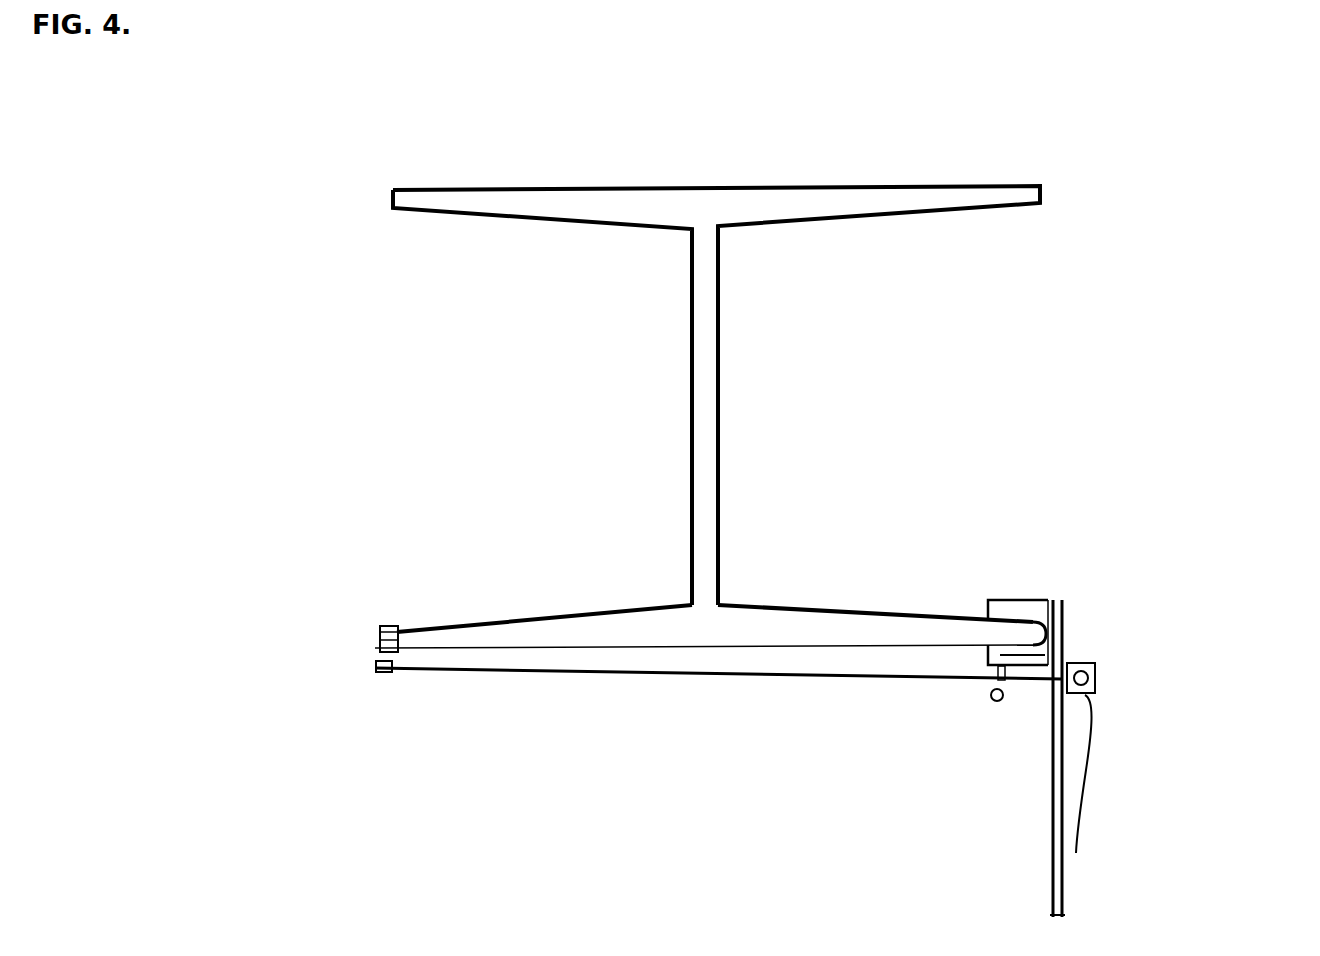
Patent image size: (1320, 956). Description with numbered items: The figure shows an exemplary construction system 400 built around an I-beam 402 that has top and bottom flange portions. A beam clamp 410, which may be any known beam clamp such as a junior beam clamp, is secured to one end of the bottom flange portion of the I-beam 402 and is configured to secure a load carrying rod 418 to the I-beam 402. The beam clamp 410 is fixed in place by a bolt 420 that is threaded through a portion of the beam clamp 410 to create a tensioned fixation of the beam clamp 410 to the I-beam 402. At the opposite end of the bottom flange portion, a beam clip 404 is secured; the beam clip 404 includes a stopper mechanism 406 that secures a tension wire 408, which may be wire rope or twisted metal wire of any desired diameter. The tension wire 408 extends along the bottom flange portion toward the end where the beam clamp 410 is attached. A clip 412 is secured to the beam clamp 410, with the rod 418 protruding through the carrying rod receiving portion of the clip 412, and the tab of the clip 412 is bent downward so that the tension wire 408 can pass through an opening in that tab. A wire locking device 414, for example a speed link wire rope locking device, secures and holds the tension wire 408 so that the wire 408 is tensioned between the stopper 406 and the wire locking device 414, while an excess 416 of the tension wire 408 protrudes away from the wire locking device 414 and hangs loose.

The construction system 400 is at (1216, 187).
The I-beam 402 is at (720, 372).
The beam clip 404 is at (388, 622).
The stopper mechanism 406 is at (382, 672).
The tension wire 408 is at (610, 675).
The beam clamp 410 is at (1020, 600).
The clip 412 is at (1063, 670).
The wire locking device 414 is at (1090, 672).
The excess of the tension wire 416 is at (1080, 760).
The load carrying rod 418 is at (1057, 900).
The bolt 420 is at (1000, 700).